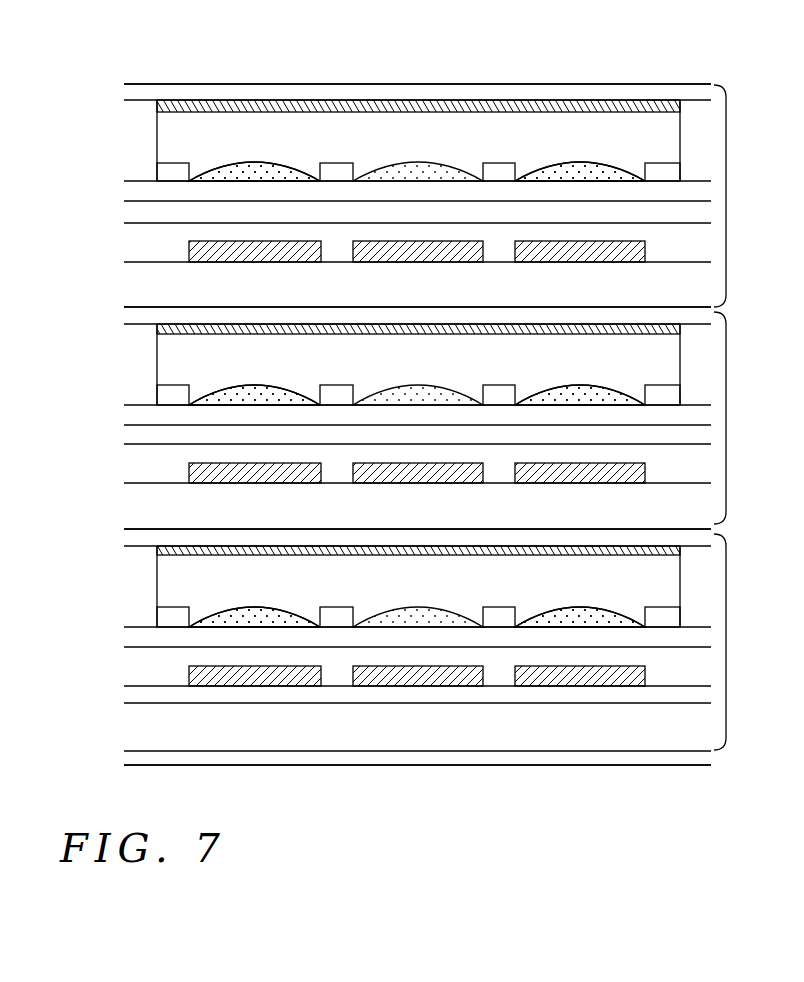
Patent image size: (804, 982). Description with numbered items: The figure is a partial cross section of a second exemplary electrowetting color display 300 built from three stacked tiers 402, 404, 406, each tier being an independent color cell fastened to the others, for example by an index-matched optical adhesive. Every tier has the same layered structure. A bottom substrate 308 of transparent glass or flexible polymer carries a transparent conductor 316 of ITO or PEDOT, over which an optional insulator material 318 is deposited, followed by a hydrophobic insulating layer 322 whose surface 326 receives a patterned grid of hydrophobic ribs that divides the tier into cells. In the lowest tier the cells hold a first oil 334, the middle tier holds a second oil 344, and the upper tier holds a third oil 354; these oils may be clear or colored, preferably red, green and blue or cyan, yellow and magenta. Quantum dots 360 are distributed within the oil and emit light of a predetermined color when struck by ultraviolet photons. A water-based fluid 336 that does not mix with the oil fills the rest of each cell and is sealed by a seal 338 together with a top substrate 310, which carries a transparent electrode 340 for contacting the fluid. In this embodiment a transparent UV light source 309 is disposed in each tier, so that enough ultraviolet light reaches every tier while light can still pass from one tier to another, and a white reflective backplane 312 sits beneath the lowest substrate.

The color display 300 is at (296, 815).
The bottom substrate 308 is at (386, 733).
The UV light source 309 is at (385, 692).
The top substrate 310 is at (386, 540).
The white reflective backplane 312 is at (662, 757).
The transparent conductor 316 is at (392, 666).
The insulator material 318 is at (390, 658).
The hydrophobic film layer 322 is at (385, 632).
The surface 326 is at (254, 599).
The first oil 334 is at (388, 594).
The fluid 336 is at (390, 586).
The seal 338 is at (376, 564).
The electrode 340 is at (418, 565).
The second oil 344 is at (278, 395).
The third oil 354 is at (278, 172).
The quantum dots 360 is at (589, 601).
The first tier 402 is at (744, 642).
The second tier 404 is at (744, 418).
The third tier 406 is at (745, 196).